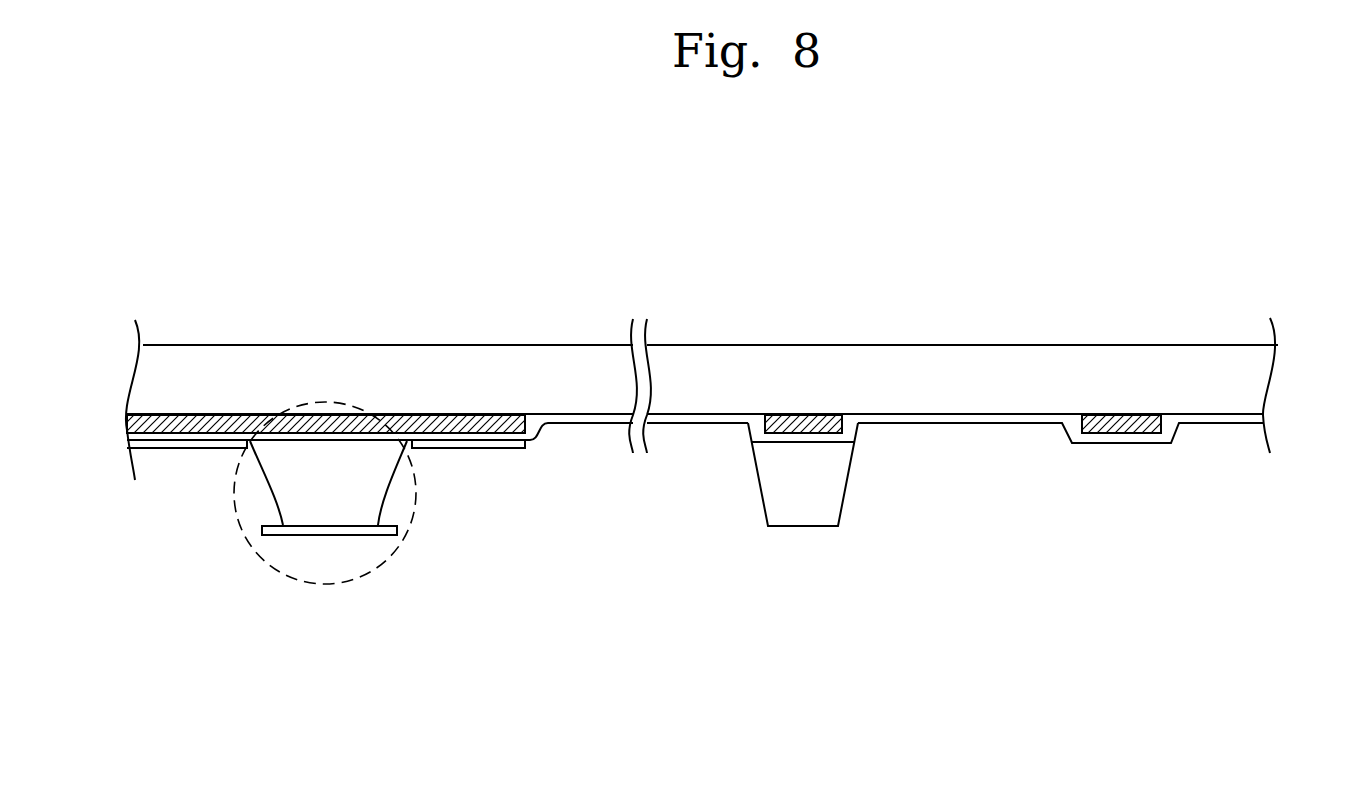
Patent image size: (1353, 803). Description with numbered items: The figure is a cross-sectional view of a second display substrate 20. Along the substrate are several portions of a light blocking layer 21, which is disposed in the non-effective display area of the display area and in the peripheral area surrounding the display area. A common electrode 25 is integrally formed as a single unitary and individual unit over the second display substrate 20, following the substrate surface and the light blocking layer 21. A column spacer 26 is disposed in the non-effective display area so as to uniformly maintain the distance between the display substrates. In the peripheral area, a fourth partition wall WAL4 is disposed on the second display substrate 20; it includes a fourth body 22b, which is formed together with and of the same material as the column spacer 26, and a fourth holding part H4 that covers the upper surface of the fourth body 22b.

The second display substrate 20 is at (1257, 378).
The light blocking layer 21 is at (349, 414).
The fourth body 22b is at (372, 483).
The common electrode 25 is at (997, 418).
The column spacer 26 is at (833, 483).
The fourth holding part H4 is at (313, 531).
The fourth partition wall WAL4 is at (332, 584).